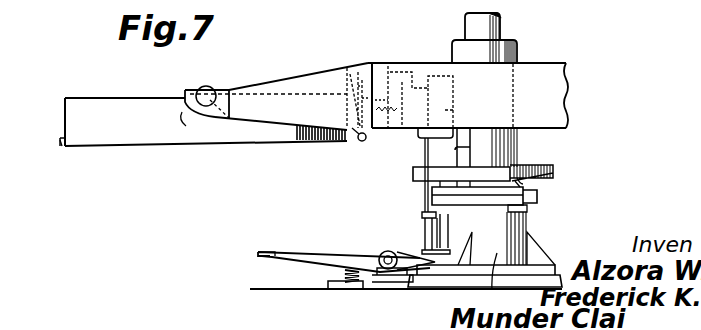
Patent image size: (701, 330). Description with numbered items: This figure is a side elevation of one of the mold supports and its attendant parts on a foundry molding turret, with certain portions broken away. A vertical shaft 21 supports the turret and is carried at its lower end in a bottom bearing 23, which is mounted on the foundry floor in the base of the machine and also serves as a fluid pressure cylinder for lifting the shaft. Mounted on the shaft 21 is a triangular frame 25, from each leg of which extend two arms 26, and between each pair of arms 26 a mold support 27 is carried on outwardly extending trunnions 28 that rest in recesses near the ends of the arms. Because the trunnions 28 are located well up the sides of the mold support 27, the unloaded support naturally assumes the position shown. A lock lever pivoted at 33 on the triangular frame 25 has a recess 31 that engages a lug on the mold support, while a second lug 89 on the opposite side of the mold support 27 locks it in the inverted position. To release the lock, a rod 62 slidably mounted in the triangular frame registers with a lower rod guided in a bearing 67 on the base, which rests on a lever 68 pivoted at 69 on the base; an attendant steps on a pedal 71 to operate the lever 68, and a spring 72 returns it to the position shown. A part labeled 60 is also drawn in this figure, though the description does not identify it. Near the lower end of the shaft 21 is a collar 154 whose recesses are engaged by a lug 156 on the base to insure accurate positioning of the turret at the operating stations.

The vertical shaft 21 is at (495, 19).
The bottom bearing 23 is at (406, 271).
The triangular frame 25 is at (543, 70).
The arms 26 is at (293, 86).
The mold support 27 is at (200, 133).
The trunnions 28 is at (207, 92).
The recess 31 is at (353, 63).
The pivot 33 is at (361, 141).
The bracket 60 is at (425, 197).
The rod 62 is at (425, 151).
The bearing 67 is at (427, 252).
The lever 68 is at (340, 258).
The pivot 69 is at (388, 270).
The pedal 71 is at (272, 252).
The spring 72 is at (353, 282).
The lug 89 is at (61, 147).
The collar 154 is at (522, 181).
The lug 156 is at (540, 167).